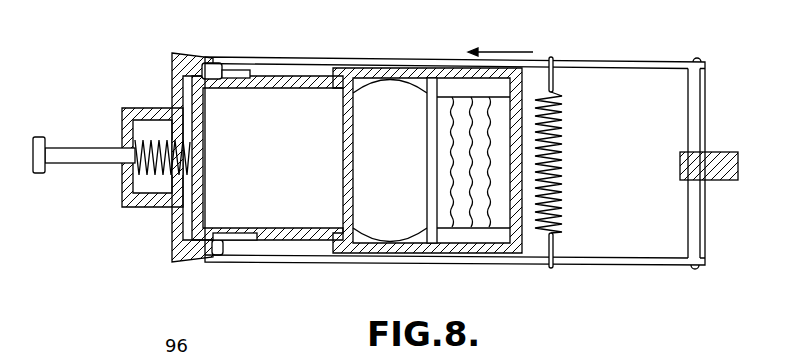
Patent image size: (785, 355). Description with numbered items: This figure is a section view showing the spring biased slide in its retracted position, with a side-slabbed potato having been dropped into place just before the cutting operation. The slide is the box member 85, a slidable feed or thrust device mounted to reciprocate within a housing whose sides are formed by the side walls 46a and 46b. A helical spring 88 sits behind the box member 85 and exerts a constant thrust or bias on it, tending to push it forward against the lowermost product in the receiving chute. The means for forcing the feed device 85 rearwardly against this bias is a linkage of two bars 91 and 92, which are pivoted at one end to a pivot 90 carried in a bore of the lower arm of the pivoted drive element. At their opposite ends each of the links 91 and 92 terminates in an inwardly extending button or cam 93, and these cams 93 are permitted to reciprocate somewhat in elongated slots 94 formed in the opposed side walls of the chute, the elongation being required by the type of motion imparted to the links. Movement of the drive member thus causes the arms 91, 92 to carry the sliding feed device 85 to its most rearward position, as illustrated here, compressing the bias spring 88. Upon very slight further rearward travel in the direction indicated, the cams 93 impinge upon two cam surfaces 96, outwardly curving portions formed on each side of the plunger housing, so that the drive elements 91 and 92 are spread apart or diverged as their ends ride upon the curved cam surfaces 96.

The side wall 46a is at (405, 69).
The side wall 46b is at (445, 246).
The box member 85 is at (320, 88).
The helical spring 88 is at (133, 165).
The pivot 90 is at (692, 124).
The bar 91 is at (615, 62).
The bar 92 is at (635, 260).
The button or cam 93 is at (230, 56).
The slot 94 is at (248, 84).
The cam surface 96 is at (174, 54).